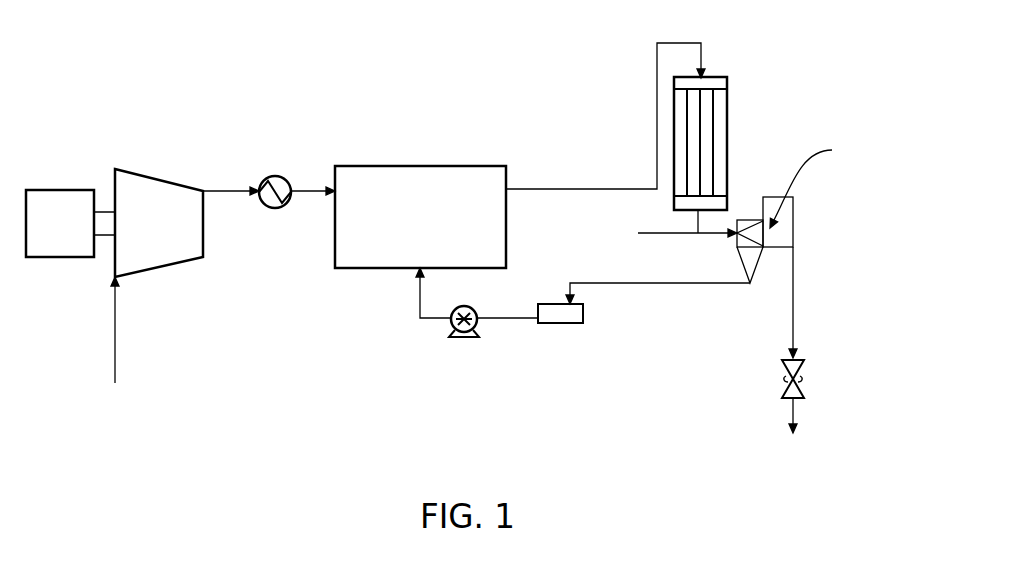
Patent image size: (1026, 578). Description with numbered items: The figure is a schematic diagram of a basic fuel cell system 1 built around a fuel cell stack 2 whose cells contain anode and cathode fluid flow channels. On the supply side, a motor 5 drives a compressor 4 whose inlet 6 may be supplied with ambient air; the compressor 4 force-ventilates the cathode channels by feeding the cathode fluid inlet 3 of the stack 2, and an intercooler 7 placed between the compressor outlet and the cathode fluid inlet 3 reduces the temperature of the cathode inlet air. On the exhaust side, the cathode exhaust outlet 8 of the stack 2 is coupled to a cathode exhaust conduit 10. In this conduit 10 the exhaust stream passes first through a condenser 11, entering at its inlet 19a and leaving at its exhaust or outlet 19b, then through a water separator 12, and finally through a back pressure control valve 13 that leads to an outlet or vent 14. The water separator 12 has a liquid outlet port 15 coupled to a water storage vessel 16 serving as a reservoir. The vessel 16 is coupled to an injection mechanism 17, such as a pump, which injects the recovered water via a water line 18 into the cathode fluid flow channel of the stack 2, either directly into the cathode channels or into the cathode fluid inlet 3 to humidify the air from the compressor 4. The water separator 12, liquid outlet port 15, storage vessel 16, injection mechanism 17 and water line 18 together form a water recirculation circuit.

The fuel cell system 1 is at (330, 68).
The fuel cell stack 2 is at (425, 166).
The cathode fluid inlet 3 is at (305, 189).
The compressor 4 is at (162, 177).
The motor 5 is at (60, 190).
The inlet 6 is at (115, 340).
The intercooler 7 is at (275, 208).
The cathode exhaust outlet 8 is at (508, 187).
The cathode exhaust conduit 10 is at (793, 233).
The condenser 11 is at (727, 100).
The water separator 12 is at (745, 220).
The back pressure control valve 13 is at (782, 373).
The outlet or vent 14 is at (785, 420).
The liquid outlet port 15 is at (648, 285).
The water storage vessel 16 is at (584, 318).
The injection mechanism 17 is at (466, 338).
The water line 18 is at (419, 298).
The inlet 19a is at (706, 76).
The exhaust or outlet 19b is at (640, 235).